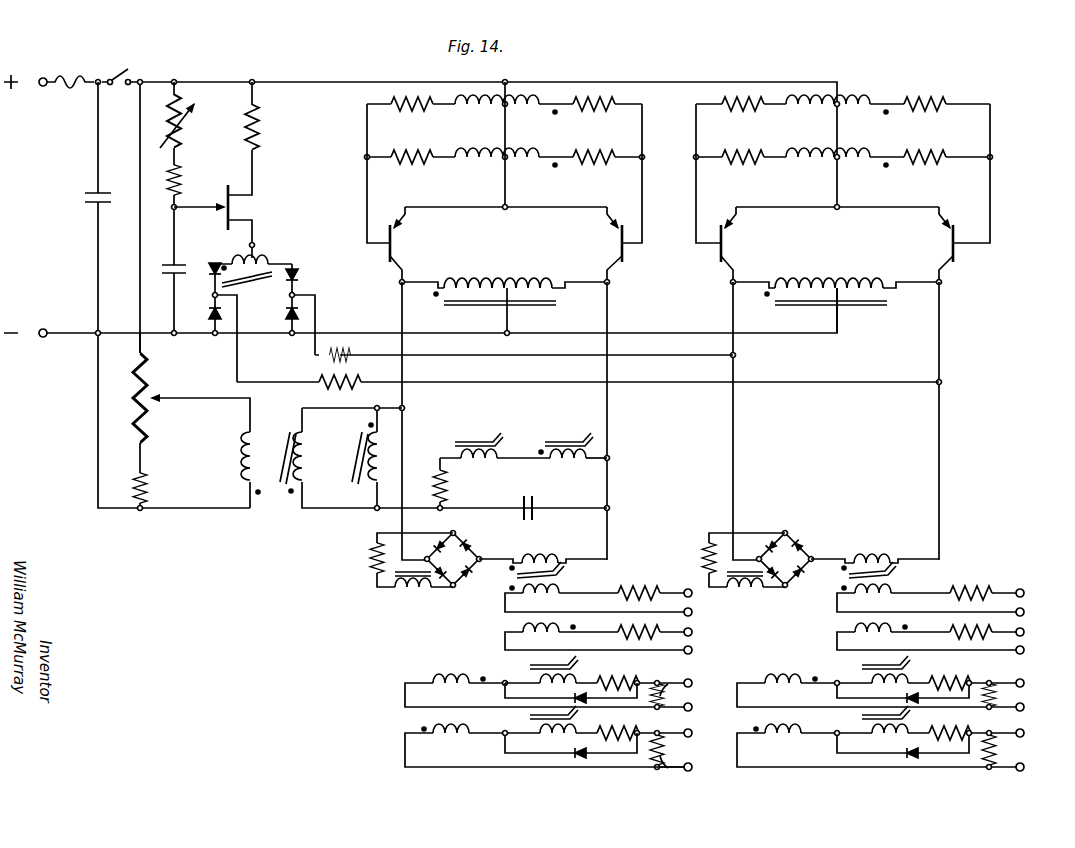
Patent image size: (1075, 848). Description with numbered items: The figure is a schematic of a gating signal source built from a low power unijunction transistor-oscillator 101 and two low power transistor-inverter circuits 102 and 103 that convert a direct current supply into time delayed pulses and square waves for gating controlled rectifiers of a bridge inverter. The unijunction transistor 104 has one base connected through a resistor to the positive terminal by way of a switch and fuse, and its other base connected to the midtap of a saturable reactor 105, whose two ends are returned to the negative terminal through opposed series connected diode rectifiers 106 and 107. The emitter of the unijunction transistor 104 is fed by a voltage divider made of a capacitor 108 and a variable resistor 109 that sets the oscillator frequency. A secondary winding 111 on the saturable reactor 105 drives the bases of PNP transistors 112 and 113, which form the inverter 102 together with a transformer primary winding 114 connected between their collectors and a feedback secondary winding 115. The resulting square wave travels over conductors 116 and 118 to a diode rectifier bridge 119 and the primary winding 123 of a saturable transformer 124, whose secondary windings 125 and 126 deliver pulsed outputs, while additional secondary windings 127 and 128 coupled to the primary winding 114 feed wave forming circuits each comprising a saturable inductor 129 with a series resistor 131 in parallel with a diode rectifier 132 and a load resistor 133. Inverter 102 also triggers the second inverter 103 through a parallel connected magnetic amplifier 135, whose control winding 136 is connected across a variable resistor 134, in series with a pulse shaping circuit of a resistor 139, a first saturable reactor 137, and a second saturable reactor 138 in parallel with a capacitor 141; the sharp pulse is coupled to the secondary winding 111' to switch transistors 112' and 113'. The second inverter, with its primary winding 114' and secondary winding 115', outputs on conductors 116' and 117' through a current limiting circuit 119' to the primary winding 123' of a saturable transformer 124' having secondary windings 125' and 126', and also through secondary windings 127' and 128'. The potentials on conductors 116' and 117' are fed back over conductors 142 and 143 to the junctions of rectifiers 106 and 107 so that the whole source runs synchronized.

The unijunction transistor-oscillator 101 is at (276, 181).
The low power transistor-inverter circuit 102 is at (518, 225).
The second low power transistor-inverter circuit 103 is at (850, 225).
The unijunction transistor 104 is at (228, 198).
The saturable reactor 105 is at (258, 256).
The opposed series connected diode rectifiers 106 is at (209, 285).
The opposed series connected diode rectifiers 107 is at (298, 291).
The capacitor 108 is at (198, 257).
The variable resistor 109 is at (178, 127).
The secondary winding 111 is at (504, 115).
The PNP transistor 112 is at (413, 244).
The PNP transistor 113 is at (597, 244).
The transformer primary winding 114 is at (505, 289).
The secondary winding 115 is at (505, 170).
The conductor 116 is at (395, 421).
The conductor 118 is at (607, 308).
The secondary winding 111' is at (843, 90).
The PNP transistor 112' is at (746, 244).
The PNP transistor 113' is at (964, 244).
The transformer primary winding 114' is at (836, 288).
The secondary winding 115' is at (843, 170).
The output conductor 116' is at (721, 421).
The output conductor 117' is at (961, 421).
The diode rectifier bridge 119 is at (430, 566).
The current limiting circuit 119' is at (758, 550).
The primary winding 123 is at (543, 546).
The primary winding 123' is at (875, 545).
The saturable transformer 124 is at (559, 572).
The saturable transformer 124' is at (893, 572).
The secondary winding 125 is at (598, 600).
The secondary winding 125' is at (930, 600).
The secondary winding 126 is at (598, 638).
The secondary winding 126' is at (913, 635).
The secondary winding 127 is at (548, 683).
The secondary winding 127' is at (880, 679).
The secondary winding 128 is at (531, 739).
The secondary winding 128' is at (880, 738).
The saturable inductor 129 is at (528, 730).
The resistor 131 is at (626, 720).
The diode rectifier 132 is at (579, 759).
The load resistor 133 is at (666, 770).
The variable resistor 134 is at (150, 382).
The parallel connected magnetic amplifier 135 is at (340, 441).
The control winding 136 is at (246, 460).
The first saturable reactor 137 is at (487, 447).
The second saturable reactor 138 is at (575, 447).
The resistor 139 is at (448, 488).
The capacitor 141 is at (534, 499).
The conductor 142 is at (518, 385).
The conductor 143 is at (518, 358).